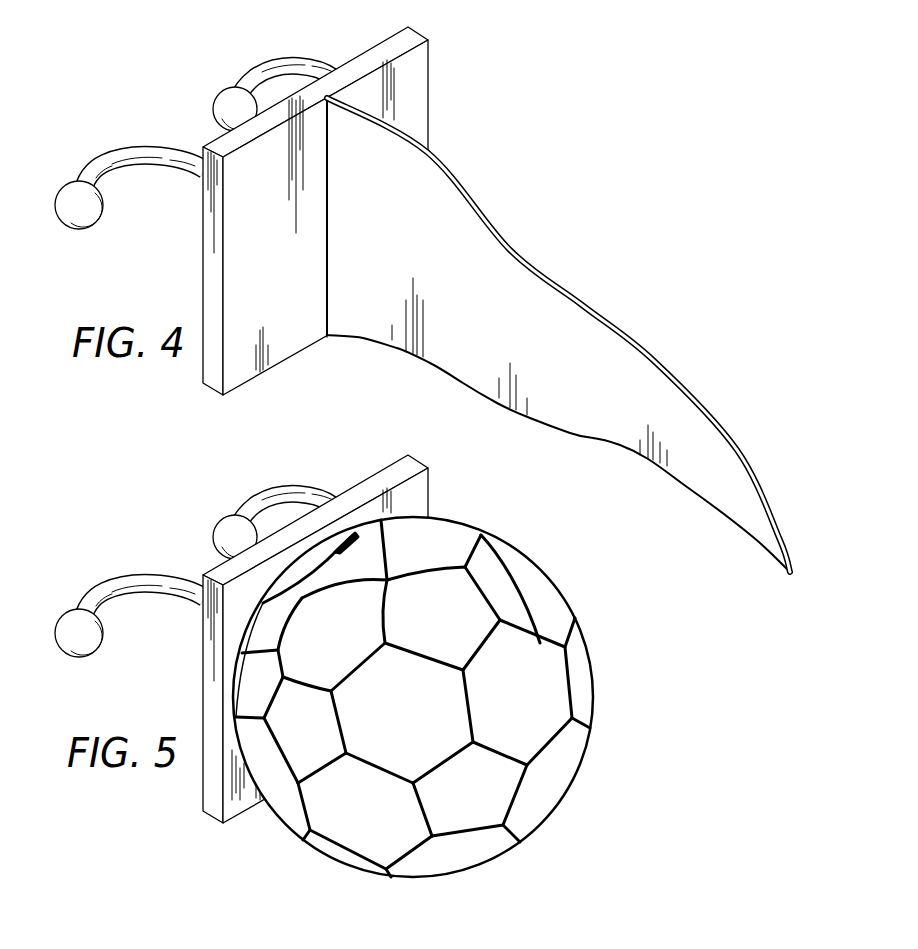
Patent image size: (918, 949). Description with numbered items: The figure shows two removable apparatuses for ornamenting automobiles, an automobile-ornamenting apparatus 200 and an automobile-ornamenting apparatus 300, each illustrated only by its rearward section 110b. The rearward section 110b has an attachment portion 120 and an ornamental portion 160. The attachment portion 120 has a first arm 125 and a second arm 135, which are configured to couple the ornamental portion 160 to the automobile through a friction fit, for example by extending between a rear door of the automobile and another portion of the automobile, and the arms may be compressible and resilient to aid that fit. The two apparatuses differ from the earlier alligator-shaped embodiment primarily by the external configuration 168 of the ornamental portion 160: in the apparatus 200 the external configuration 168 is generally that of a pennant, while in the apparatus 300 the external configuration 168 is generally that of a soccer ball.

In FIG. 4, the automobile-ornamenting apparatus 200 is at (422, 299).
In FIG. 5, the automobile-ornamenting apparatus 300 is at (367, 654).
In FIG. 4, the rearward section 110b is at (422, 299).
In FIG. 5, the rearward section 110b is at (367, 654).
In FIG. 4, the attachment portion 120 is at (180, 115).
In FIG. 5, the attachment portion 120 is at (300, 639).
In FIG. 5, the first arm 125 is at (285, 495).
In FIG. 5, the second arm 135 is at (116, 590).
In FIG. 4, the ornamental portion 160 is at (558, 335).
In FIG. 5, the ornamental portion 160 is at (459, 697).
In FIG. 4, the external configuration 168 is at (486, 246).
In FIG. 5, the external configuration 168 is at (527, 580).